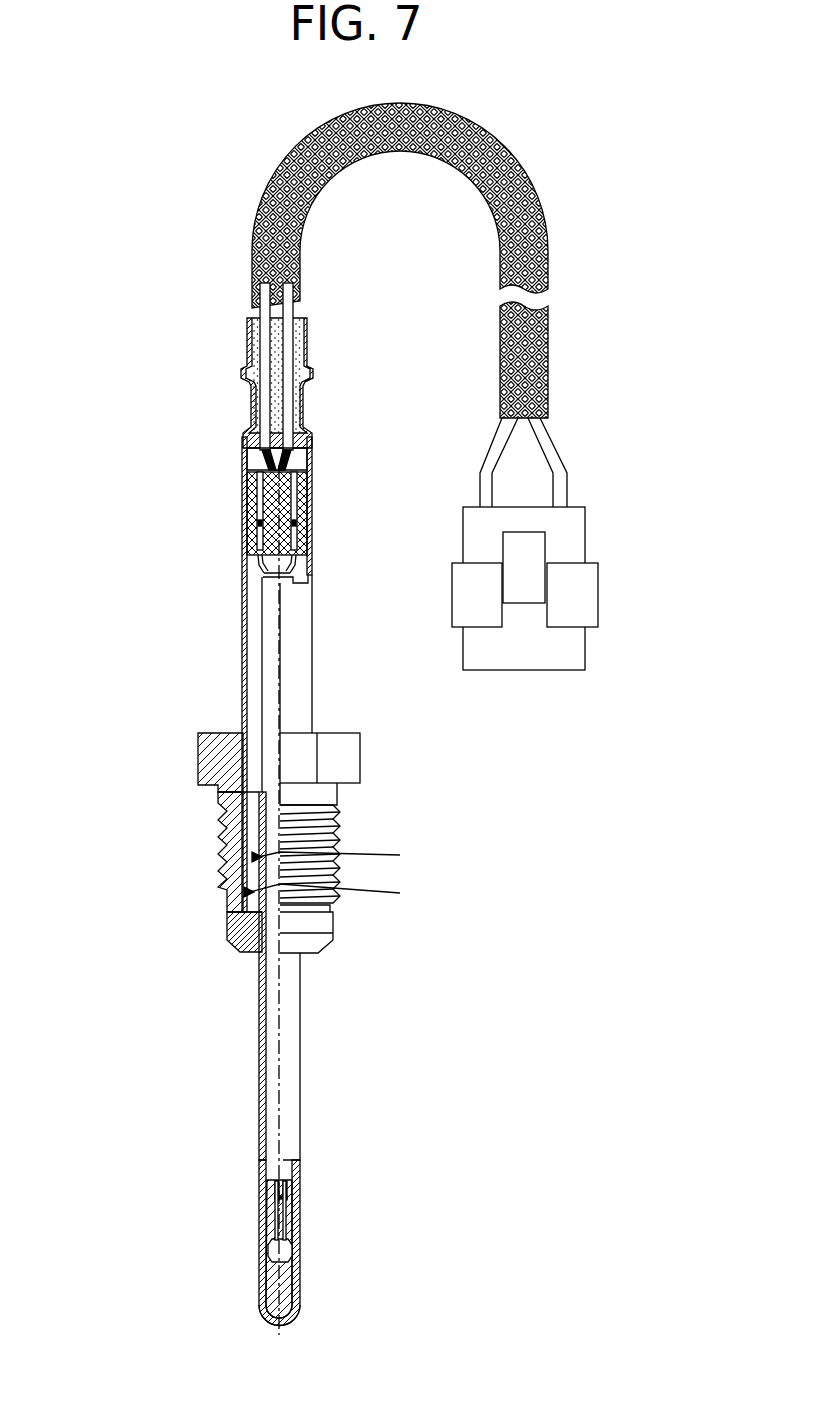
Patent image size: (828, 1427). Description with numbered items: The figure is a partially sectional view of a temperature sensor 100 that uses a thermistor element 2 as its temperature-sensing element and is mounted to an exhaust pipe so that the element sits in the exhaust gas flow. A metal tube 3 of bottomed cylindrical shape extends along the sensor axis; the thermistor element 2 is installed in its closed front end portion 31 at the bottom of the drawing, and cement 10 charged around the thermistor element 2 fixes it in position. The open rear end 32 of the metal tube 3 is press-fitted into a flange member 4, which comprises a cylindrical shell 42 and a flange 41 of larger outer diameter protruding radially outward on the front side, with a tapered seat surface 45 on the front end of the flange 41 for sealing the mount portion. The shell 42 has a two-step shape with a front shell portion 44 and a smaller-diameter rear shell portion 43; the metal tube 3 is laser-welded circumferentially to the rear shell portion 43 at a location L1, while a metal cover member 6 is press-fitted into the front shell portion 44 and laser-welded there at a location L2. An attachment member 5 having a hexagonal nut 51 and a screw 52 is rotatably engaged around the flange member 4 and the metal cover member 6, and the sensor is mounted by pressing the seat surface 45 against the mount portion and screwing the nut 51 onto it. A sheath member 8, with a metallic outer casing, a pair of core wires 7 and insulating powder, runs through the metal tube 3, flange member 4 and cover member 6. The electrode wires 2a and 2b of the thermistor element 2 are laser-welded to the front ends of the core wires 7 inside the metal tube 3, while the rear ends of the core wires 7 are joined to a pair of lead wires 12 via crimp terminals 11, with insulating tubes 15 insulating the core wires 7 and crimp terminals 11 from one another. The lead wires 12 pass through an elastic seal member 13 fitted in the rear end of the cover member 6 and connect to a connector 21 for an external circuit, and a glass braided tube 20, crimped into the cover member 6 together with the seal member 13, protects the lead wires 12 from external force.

The temperature sensor 100 is at (203, 267).
The glass braided tube 20 is at (303, 273).
The connector 21 is at (572, 537).
The elastic seal member 13 is at (313, 376).
The lead wires 12 is at (265, 419).
The metal cover member 6 is at (242, 610).
The crimp terminals 11 is at (303, 490).
The insulating tubes 15 is at (256, 528).
The core wires 7 is at (303, 573).
The sheath member 8 is at (268, 1105).
The rear end 32 is at (258, 793).
The attachment member 5 is at (333, 843).
The hexagonal nut 51 is at (350, 758).
The screw 52 is at (337, 823).
The flange member 4 is at (172, 890).
The flange 41 is at (227, 917).
The cylindrical shell 42 is at (185, 862).
The rear shell portion 43 is at (258, 857).
The front shell portion 44 is at (250, 892).
The seat surface 45 is at (227, 945).
The welding location L1 is at (347, 852).
The welding location L2 is at (343, 890).
The metal tube 3 is at (260, 1140).
The front end portion 31 is at (262, 1311).
The cement 10 is at (286, 1289).
The thermistor element 2 is at (292, 1250).
The electrode wire 2a is at (287, 1212).
The electrode wire 2b is at (273, 1223).